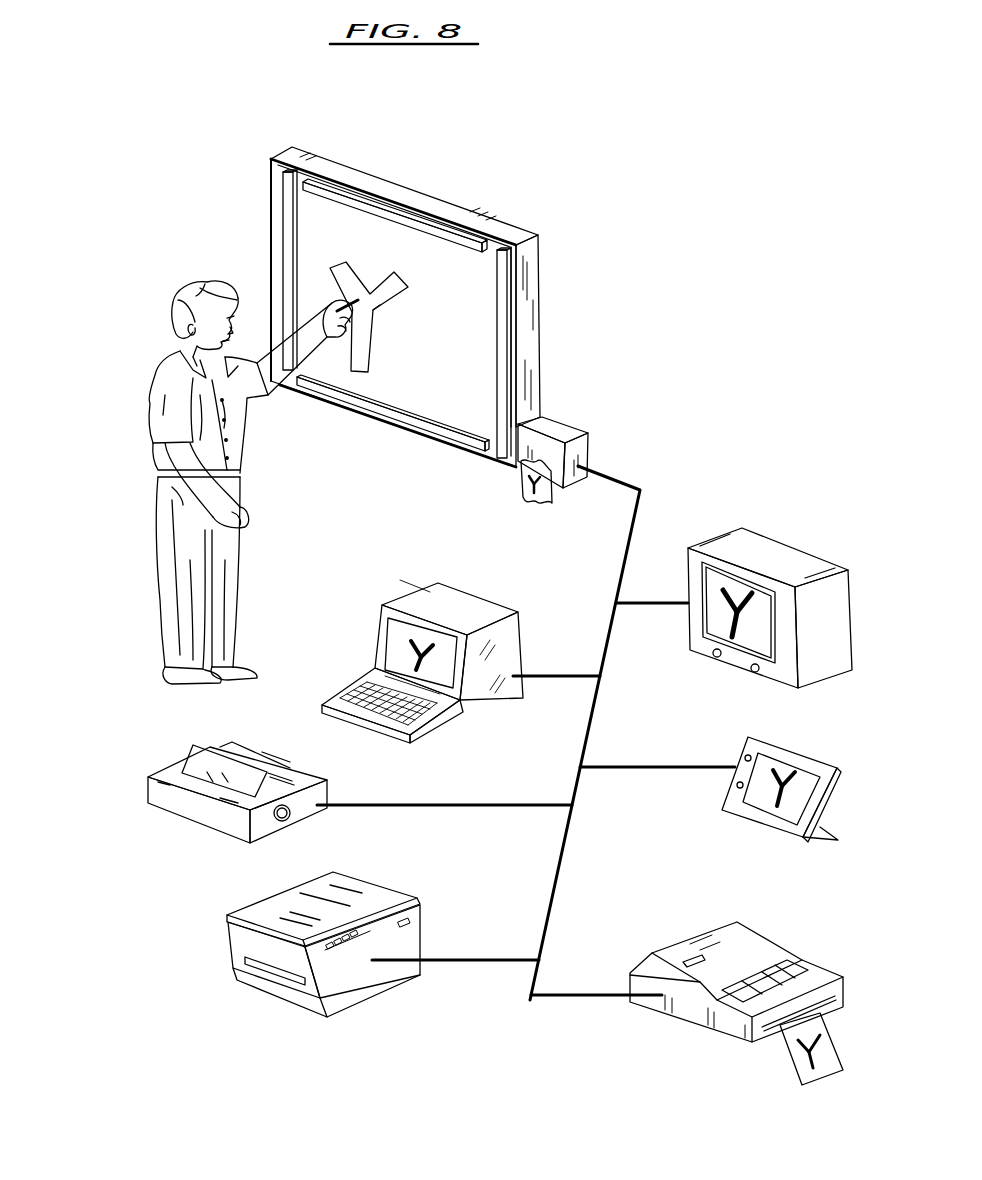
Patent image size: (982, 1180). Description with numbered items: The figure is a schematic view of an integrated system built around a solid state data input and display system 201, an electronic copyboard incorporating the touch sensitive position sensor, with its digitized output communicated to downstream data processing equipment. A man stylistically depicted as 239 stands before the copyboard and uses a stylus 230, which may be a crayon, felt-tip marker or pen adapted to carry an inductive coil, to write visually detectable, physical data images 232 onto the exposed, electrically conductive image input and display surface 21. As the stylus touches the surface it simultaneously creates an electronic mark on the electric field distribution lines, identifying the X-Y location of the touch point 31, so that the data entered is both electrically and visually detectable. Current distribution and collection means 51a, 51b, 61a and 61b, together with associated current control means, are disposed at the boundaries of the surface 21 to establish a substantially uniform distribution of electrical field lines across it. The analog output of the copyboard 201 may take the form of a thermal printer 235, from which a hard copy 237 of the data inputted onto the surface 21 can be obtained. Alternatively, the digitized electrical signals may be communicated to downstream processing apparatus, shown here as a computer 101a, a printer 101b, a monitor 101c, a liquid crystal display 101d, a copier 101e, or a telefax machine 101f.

The solid state data input and display system 201 is at (529, 212).
The exposed surface 21 is at (485, 282).
The current distribution and collection means 61a is at (403, 227).
The current distribution and collection means 61b is at (288, 220).
The current distribution and collection means 51a is at (425, 427).
The current distribution and collection means 51b is at (500, 357).
The touch point 31 is at (358, 303).
The stylus 230 is at (335, 297).
The data images 232 is at (386, 318).
The thermal printer 235 is at (563, 433).
The hard copy 237 is at (522, 485).
The man 239 is at (180, 407).
The computer 101a is at (462, 608).
The printer 101b is at (162, 798).
The monitor 101c is at (787, 557).
The liquid crystal display 101d is at (752, 747).
The copier 101e is at (243, 943).
The telefax machine 101f is at (682, 952).